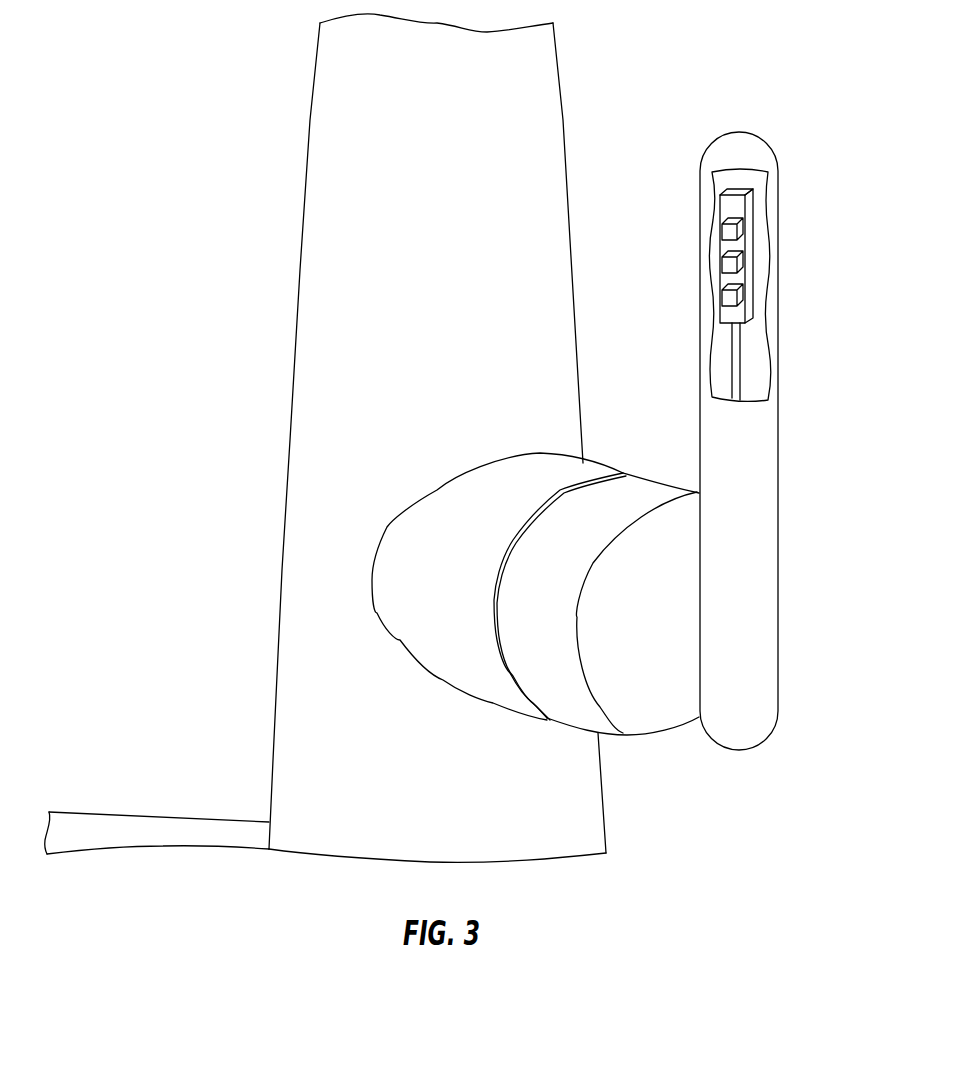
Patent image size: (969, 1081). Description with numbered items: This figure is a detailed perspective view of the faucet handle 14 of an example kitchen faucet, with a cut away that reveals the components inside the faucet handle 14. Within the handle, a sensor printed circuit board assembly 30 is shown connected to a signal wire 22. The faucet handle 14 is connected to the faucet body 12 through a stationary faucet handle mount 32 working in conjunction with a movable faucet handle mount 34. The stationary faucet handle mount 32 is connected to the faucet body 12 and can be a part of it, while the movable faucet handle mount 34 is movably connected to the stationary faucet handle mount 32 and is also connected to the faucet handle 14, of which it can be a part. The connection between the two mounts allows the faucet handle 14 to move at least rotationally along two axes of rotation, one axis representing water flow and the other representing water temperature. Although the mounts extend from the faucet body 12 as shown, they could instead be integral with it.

The faucet body 12 is at (298, 312).
The faucet handle 14 is at (778, 502).
The signal wire 22 is at (742, 378).
The sensor printed circuit board assembly 30 is at (753, 258).
The stationary faucet handle mount 32 is at (400, 553).
The movable faucet handle mount 34 is at (663, 733).